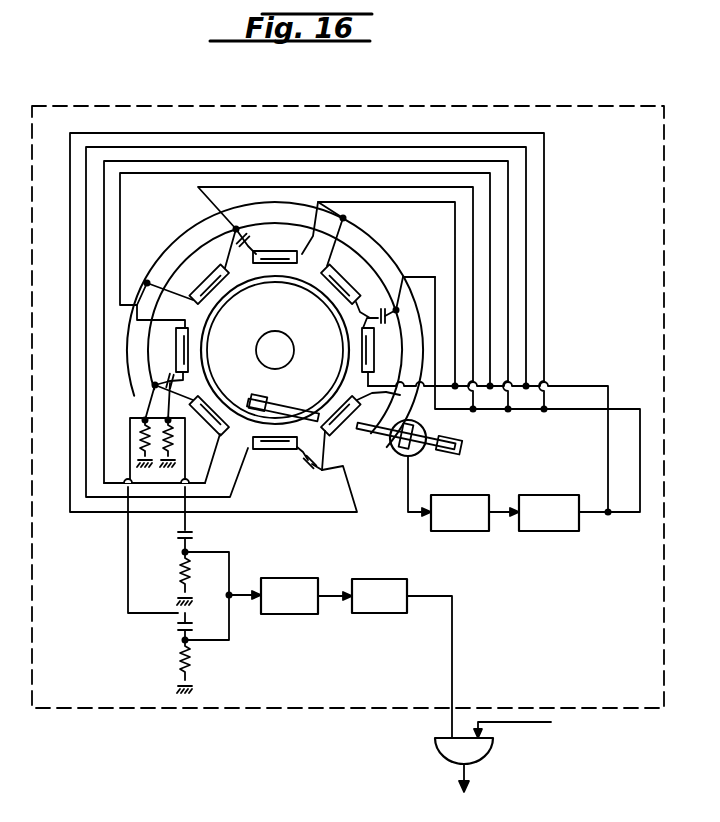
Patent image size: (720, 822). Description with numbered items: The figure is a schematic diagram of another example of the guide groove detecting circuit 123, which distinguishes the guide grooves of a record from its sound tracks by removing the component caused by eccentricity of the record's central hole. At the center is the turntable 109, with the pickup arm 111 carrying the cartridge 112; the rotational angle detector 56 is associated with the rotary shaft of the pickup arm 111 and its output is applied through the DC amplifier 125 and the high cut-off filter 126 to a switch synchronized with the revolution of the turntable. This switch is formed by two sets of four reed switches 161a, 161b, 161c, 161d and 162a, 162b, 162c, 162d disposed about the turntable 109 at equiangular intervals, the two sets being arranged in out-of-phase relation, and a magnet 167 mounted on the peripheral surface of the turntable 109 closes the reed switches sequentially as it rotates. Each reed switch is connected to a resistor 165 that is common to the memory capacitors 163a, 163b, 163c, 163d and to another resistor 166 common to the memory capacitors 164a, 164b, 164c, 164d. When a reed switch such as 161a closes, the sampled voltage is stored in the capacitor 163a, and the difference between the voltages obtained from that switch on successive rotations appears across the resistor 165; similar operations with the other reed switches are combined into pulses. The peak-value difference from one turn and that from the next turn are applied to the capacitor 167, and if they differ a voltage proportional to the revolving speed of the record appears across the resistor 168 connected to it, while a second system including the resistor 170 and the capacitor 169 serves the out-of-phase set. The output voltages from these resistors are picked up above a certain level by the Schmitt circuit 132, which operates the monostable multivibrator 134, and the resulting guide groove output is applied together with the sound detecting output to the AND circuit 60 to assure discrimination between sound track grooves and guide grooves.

The guide groove detecting circuit 123 is at (318, 90).
The turntable 109 is at (297, 279).
The cartridge 112 is at (275, 350).
The pickup arm 111 is at (272, 400).
The reed switch 161a is at (362, 340).
The reed switch 161b is at (277, 246).
The reed switch 161c is at (196, 350).
The reed switch 161d is at (264, 458).
The reed switch 162a is at (360, 276).
The reed switch 162b is at (205, 262).
The reed switch 162c is at (193, 418).
The reed switch 162d is at (350, 445).
The memory capacitor 163a is at (378, 316).
The memory capacitor 163b is at (228, 222).
The memory capacitor 163c is at (190, 378).
The memory capacitor 163d is at (310, 470).
The memory capacitor 164a is at (370, 215).
The memory capacitor 164b is at (160, 275).
The memory capacitor 164c is at (152, 390).
The memory capacitor 164d is at (418, 410).
The resistor 165 is at (143, 445).
The resistor 166 is at (140, 437).
The capacitor 167 is at (194, 536).
The resistor 168 is at (180, 572).
The capacitor 169 is at (170, 634).
The resistor 170 is at (172, 664).
The DC amplifier 125 is at (462, 533).
The high cut-off filter 126 is at (550, 533).
The Schmitt circuit 132 is at (292, 576).
The monostable multivibrator 134 is at (380, 576).
The rotational angle detector 56 is at (418, 455).
The AND circuit 60 is at (484, 752).